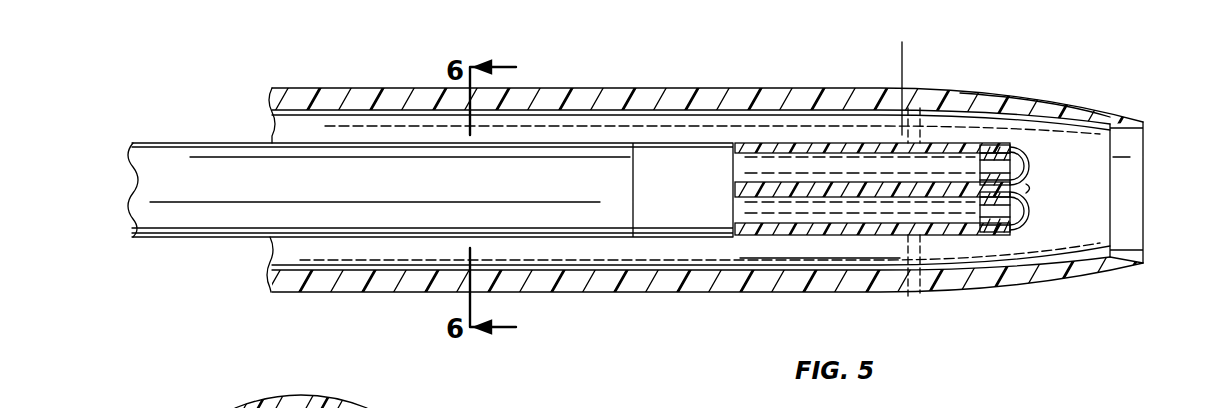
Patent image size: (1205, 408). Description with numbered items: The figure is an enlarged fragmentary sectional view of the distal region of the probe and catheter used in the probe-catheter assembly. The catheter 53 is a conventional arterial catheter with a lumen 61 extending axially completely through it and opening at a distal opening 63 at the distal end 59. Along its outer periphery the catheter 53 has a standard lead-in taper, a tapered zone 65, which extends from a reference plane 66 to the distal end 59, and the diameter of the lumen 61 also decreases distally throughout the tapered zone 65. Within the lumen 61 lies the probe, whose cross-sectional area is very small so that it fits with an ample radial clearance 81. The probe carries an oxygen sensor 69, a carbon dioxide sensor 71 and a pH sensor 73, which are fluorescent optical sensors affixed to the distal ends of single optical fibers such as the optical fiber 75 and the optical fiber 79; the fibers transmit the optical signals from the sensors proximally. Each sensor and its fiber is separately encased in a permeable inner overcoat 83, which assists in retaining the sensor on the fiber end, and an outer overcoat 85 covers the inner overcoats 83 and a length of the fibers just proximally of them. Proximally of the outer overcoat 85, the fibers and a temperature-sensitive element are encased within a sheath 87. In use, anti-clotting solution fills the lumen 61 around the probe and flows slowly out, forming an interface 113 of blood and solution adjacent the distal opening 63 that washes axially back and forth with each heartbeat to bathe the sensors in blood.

The catheter 53 is at (807, 66).
The distal end 59 is at (1146, 155).
The lumen 61 is at (758, 259).
The distal opening 63 is at (1143, 246).
The tapered zone 65 is at (1087, 113).
The reference plane 66 is at (902, 70).
The oxygen sensor 69 is at (1023, 160).
The carbon dioxide sensor 71 is at (1032, 188).
The pH sensor 73 is at (1021, 230).
The optical fiber 75 is at (992, 150).
The optical fiber 79 is at (995, 232).
The radial clearance 81 is at (582, 261).
The inner overcoat 83 is at (1036, 161).
The outer overcoat 85 is at (817, 231).
The sheath 87 is at (201, 132).
The interface 113 is at (908, 296).